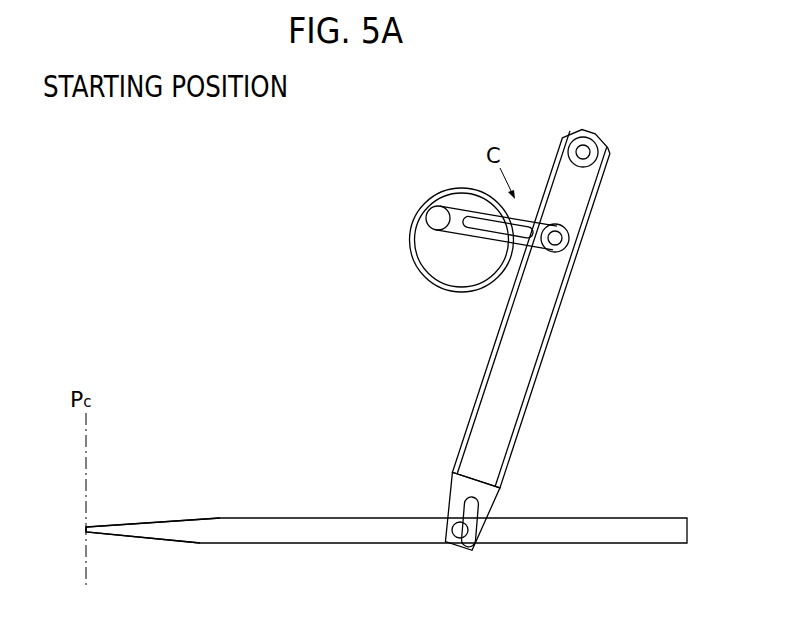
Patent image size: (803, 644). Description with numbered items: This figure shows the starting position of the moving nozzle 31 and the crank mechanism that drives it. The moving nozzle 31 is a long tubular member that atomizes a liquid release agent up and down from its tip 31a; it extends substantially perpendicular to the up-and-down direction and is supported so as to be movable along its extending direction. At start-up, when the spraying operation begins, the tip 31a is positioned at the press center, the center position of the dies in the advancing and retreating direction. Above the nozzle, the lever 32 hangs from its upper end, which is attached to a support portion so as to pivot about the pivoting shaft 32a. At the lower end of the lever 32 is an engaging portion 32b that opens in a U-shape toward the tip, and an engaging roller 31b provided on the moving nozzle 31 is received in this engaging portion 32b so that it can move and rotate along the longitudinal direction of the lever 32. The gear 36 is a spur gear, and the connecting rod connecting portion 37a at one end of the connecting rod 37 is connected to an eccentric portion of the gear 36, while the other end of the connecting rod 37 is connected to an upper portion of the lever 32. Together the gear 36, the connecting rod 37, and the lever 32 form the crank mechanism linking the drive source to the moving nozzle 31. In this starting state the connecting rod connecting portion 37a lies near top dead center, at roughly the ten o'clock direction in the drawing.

The moving nozzle 31 is at (622, 543).
The tip 31a is at (88, 525).
The engaging roller 31b is at (458, 538).
The lever 32 is at (543, 363).
The pivoting shaft 32a is at (590, 155).
The engaging portion 32b is at (477, 532).
The gear 36 is at (432, 202).
The connecting rod 37 is at (468, 237).
The connecting rod connecting portion 37a is at (428, 221).